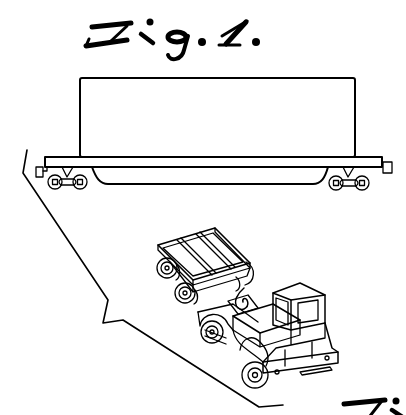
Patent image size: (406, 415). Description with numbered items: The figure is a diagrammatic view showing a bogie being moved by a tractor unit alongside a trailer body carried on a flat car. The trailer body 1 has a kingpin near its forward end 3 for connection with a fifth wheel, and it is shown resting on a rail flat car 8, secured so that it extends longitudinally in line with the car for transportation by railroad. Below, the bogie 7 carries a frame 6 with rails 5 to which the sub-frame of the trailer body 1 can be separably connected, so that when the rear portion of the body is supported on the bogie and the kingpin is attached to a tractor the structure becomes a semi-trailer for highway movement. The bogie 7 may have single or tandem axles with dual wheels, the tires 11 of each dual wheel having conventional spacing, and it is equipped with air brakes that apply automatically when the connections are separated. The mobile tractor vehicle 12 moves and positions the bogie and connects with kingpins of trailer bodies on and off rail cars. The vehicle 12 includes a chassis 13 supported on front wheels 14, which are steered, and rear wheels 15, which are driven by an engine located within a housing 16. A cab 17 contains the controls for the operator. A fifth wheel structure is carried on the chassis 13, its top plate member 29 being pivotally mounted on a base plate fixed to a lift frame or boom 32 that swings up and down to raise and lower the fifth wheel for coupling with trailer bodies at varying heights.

The trailer body 1 is at (320, 78).
The forward end 3 is at (356, 103).
The rail flat car 8 is at (367, 158).
The rails 5 is at (163, 244).
The frame 6 is at (197, 232).
The bogie 7 is at (157, 273).
The tires 11 is at (255, 288).
The top plate member 29 is at (255, 294).
The mobile tractor vehicle 12 is at (320, 295).
The cab 17 is at (302, 288).
The lift frame or boom 32 is at (266, 325).
The housing 16 is at (240, 358).
The chassis 13 is at (200, 318).
The rear wheels 15 is at (205, 338).
The front wheels 14 is at (258, 388).